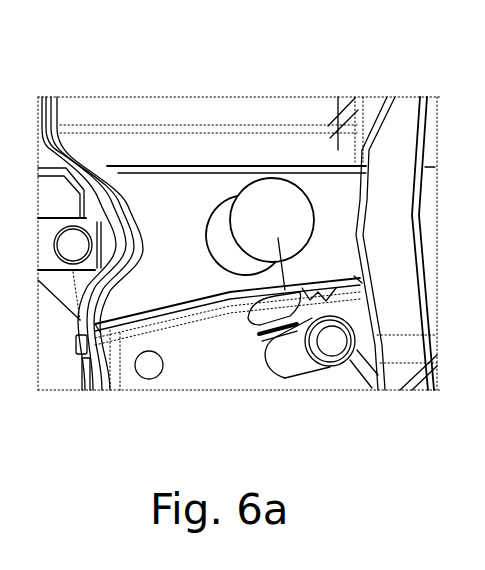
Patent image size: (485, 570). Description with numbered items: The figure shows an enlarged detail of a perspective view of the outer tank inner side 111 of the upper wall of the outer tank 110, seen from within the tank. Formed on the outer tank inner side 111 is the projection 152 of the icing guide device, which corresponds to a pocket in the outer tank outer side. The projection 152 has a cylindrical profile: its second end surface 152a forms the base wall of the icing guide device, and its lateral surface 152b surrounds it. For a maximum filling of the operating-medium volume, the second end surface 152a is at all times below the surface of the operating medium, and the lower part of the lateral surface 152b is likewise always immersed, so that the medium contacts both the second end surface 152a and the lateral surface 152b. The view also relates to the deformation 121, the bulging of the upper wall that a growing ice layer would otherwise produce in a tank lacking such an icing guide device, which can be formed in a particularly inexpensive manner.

The outer tank 110 is at (345, 260).
The outer tank inner side 111 is at (193, 277).
The deformation 121 is at (77, 318).
The projection 152 is at (256, 322).
The second end surface 152a is at (270, 203).
The lateral surface 152b is at (216, 212).